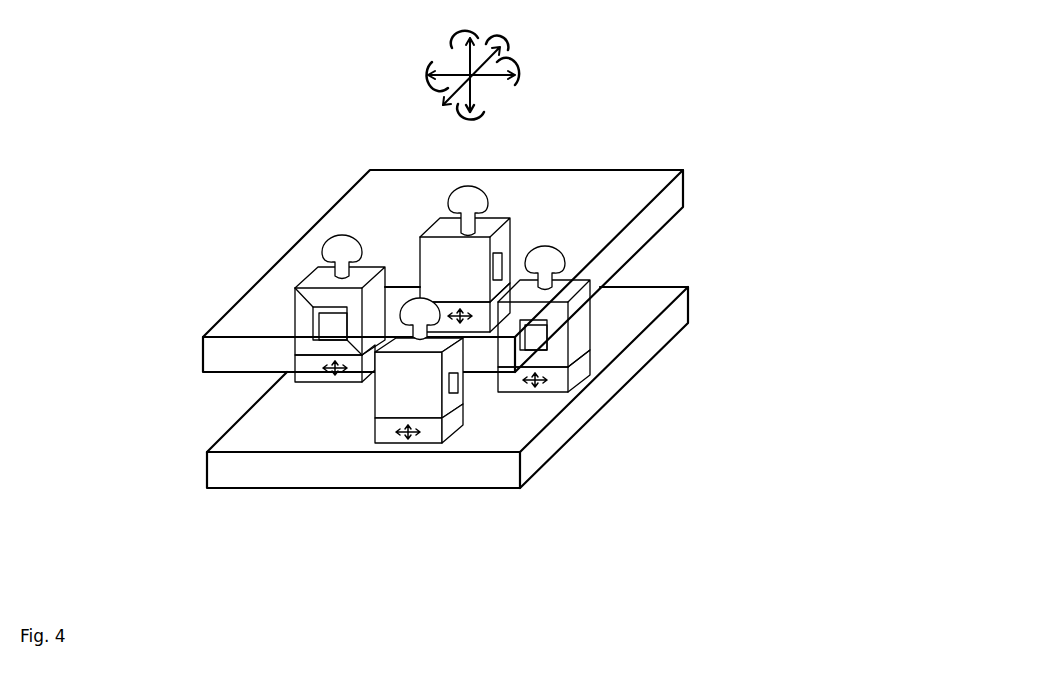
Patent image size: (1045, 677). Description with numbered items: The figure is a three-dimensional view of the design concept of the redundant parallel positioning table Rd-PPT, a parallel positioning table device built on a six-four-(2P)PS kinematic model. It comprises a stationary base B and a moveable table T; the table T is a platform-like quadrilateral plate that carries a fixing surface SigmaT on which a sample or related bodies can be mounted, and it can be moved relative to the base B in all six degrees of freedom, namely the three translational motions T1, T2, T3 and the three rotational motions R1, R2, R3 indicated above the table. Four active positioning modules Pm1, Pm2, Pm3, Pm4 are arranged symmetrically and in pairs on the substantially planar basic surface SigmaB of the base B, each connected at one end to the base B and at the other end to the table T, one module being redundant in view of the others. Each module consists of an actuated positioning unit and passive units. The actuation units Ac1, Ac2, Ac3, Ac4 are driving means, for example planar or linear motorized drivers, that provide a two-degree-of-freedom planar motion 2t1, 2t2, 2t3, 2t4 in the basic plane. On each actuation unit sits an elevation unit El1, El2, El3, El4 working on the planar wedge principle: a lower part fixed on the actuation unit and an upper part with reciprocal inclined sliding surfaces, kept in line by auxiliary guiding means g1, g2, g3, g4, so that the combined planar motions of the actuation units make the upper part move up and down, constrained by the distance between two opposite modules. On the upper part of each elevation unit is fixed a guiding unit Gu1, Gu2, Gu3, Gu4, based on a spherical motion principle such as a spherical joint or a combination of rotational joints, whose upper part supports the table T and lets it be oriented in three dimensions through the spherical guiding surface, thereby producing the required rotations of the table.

The moveable table T is at (683, 188).
The stationary base B is at (540, 452).
The fixing surface SigmaT is at (623, 213).
The planar basic surface SigmaB is at (268, 447).
The positioning module Pm1 is at (390, 465).
The positioning module Pm2 is at (632, 374).
The positioning module Pm3 is at (534, 189).
The positioning module Pm4 is at (274, 277).
The guiding unit Gu1 is at (418, 312).
The guiding unit Gu2 is at (553, 265).
The guiding unit Gu3 is at (492, 181).
The guiding unit Gu4 is at (318, 235).
The elevation unit El1 is at (418, 390).
The elevation unit El2 is at (570, 318).
The elevation unit El3 is at (495, 223).
The elevation unit El4 is at (328, 276).
The actuation unit Ac1 is at (413, 439).
The actuation unit Ac2 is at (570, 368).
The actuation unit Ac3 is at (512, 285).
The actuation unit Ac4 is at (295, 352).
The two-translation planar motion 2t1 is at (425, 430).
The two-translation planar motion 2t2 is at (538, 387).
The two-translation planar motion 2t3 is at (455, 308).
The two-translation planar motion 2t4 is at (290, 368).
The auxiliary guiding means g1 is at (468, 403).
The auxiliary guiding means g2 is at (554, 358).
The auxiliary guiding means g3 is at (524, 242).
The auxiliary guiding means g4 is at (310, 330).
The redundant parallel positioning table Rd-PPT is at (687, 505).
The translational motion T1 is at (427, 93).
The translational motion T2 is at (487, 71).
The translational motion T3 is at (472, 63).
The rotational motion R1 is at (457, 121).
The rotational motion R2 is at (479, 76).
The rotational motion R3 is at (455, 34).